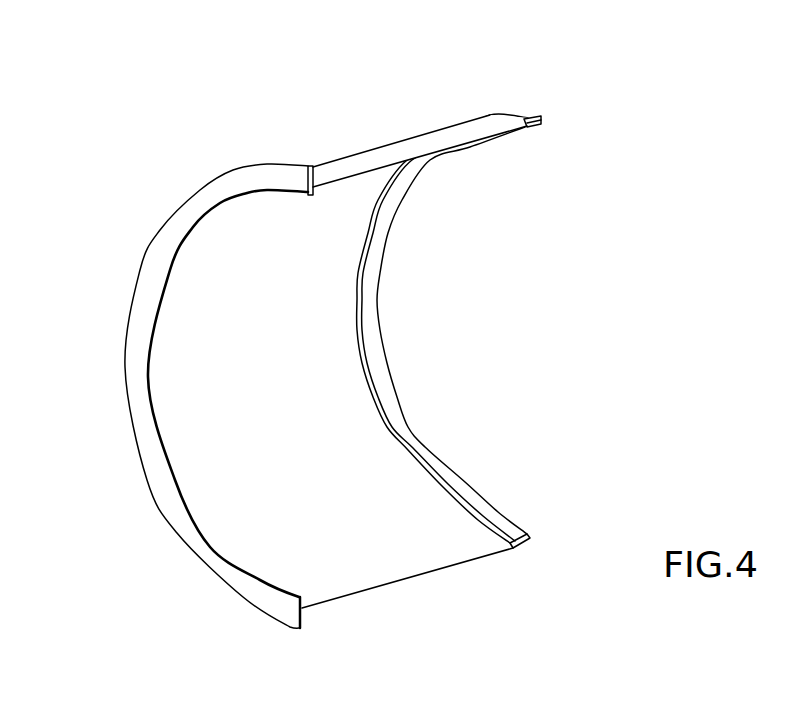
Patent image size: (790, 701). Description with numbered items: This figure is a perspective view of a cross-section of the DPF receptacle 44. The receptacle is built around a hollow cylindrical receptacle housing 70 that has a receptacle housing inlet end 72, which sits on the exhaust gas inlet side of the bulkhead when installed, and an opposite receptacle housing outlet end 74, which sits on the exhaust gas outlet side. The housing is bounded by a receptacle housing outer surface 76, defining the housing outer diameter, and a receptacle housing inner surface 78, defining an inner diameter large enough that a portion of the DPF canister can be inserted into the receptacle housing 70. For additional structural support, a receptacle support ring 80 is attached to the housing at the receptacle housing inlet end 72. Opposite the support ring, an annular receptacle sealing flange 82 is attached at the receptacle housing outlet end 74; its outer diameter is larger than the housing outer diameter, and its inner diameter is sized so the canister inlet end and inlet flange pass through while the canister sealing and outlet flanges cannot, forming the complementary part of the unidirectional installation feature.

The DPF receptacle 44 is at (169, 150).
The receptacle housing 70 is at (352, 152).
The receptacle housing inlet end 72 is at (540, 113).
The receptacle housing outlet end 74 is at (305, 609).
The receptacle housing outer surface 76 is at (447, 136).
The receptacle housing inner surface 78 is at (417, 568).
The receptacle support ring 80 is at (370, 305).
The receptacle sealing flange 82 is at (140, 360).